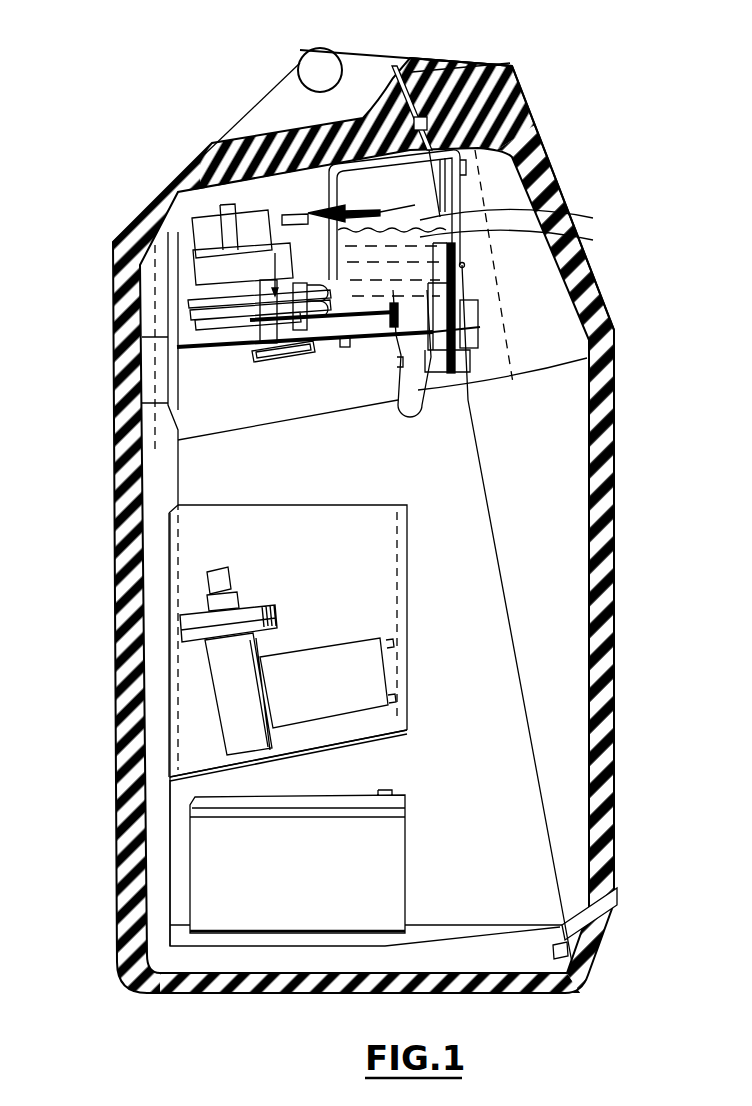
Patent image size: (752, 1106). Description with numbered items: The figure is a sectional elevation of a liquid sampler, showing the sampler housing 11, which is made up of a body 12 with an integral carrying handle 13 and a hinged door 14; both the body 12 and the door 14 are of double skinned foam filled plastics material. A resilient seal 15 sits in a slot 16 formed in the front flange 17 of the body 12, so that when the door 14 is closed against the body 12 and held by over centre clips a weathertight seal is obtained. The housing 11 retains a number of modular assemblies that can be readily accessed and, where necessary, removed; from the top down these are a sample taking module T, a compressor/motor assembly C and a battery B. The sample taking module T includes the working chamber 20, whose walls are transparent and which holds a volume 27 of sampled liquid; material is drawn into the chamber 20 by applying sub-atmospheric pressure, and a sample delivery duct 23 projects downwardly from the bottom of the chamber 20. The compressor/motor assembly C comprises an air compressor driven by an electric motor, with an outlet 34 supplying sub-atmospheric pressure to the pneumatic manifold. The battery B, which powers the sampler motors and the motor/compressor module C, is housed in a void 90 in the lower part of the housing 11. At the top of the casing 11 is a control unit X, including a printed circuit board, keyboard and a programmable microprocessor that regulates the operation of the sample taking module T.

The sampler housing 11 is at (180, 167).
The body 12 is at (502, 958).
The carrying handle 13 is at (308, 72).
The hinged door 14 is at (530, 112).
The resilient seal 15 is at (461, 64).
The slot 16 is at (617, 892).
The front flange 17 is at (393, 66).
The working chamber 20 is at (593, 218).
The sample delivery duct 23 is at (587, 358).
The volume of sampled liquid 27 is at (593, 240).
The outlet 34 is at (215, 585).
The void 90 is at (175, 868).
The battery B is at (305, 895).
The compressor/motor assembly C is at (168, 677).
The sample taking module T is at (155, 336).
The control unit X is at (157, 340).